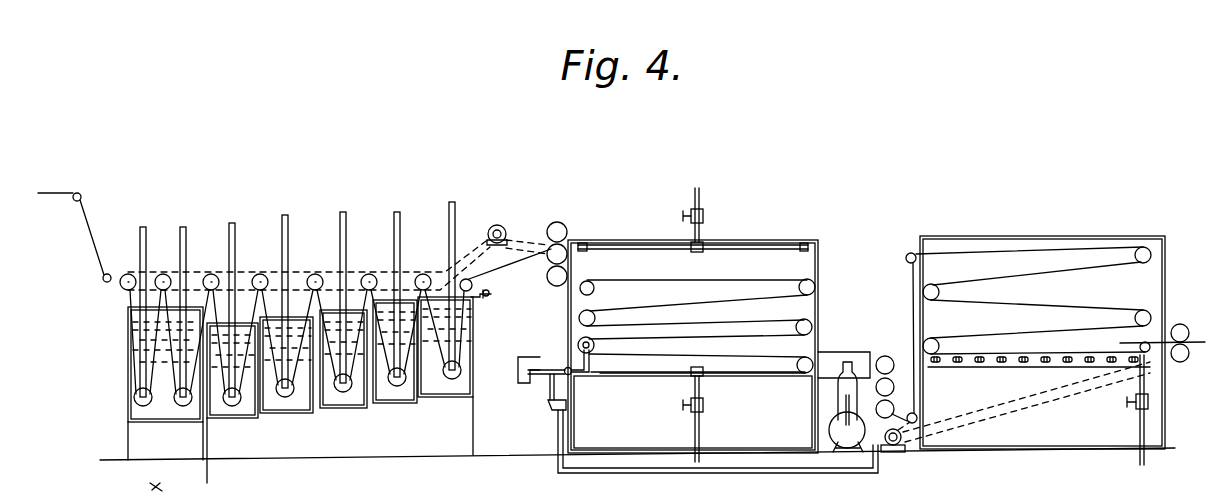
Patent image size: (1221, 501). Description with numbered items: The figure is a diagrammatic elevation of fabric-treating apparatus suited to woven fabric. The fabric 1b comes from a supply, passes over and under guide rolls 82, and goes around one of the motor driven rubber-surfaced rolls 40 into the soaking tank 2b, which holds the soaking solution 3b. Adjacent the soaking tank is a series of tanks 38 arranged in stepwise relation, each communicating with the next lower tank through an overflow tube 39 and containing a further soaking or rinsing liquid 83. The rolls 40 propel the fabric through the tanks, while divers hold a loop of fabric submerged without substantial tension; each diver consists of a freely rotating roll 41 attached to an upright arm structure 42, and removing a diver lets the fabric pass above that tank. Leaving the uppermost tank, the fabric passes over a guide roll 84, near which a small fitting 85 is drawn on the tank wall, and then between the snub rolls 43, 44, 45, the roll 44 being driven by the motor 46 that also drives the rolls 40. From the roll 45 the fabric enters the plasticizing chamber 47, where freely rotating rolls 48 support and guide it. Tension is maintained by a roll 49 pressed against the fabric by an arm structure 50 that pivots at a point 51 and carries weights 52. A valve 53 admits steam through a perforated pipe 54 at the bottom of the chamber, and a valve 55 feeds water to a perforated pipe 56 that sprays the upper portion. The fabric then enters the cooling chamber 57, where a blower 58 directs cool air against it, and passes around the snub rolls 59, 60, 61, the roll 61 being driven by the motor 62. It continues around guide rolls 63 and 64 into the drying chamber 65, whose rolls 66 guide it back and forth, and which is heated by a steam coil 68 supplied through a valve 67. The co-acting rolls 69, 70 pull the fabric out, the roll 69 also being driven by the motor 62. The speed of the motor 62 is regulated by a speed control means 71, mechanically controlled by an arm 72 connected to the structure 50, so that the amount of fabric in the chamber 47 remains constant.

The fabric 1b is at (88, 220).
The soaking tank 2b is at (128, 408).
The soaking solution 3b is at (158, 356).
The tanks 38 is at (256, 420).
The overflow tube 39 is at (208, 326).
The motor driven rubber-surfaced rolls 40 is at (124, 289).
The roll 41 is at (145, 408).
The upright arm structure 42 is at (184, 226).
The snub roll 43 is at (565, 226).
The snub roll 44 is at (548, 258).
The snub roll 45 is at (550, 281).
The motor 46 is at (500, 226).
The plasticizing chamber 47 is at (569, 323).
The rolls 48 is at (595, 293).
The roll 49 is at (597, 340).
The arm structure 50 is at (594, 362).
The pivot point 51 is at (573, 375).
The weights 52 is at (540, 358).
The valve 53 is at (704, 406).
The perforated pipe 54 is at (701, 371).
The valve 55 is at (704, 216).
The perforated pipe 56 is at (702, 252).
The cooling chamber 57 is at (852, 352).
The blower 58 is at (835, 403).
The snub roll 59 is at (889, 357).
The snub roll 60 is at (908, 360).
The snub roll 61 is at (879, 406).
The motor 62 is at (900, 452).
The guide roll 63 is at (917, 416).
The guide roll 64 is at (907, 260).
The drying chamber 65 is at (992, 238).
The rolls 66 is at (934, 285).
The valve 67 is at (1136, 406).
The steam coil 68 is at (1024, 356).
The roll 69 is at (1186, 362).
The roll 70 is at (1186, 325).
The speed control means 71 is at (553, 406).
The arm 72 is at (549, 386).
The guide rolls 82 is at (73, 198).
The soaking or rinsing liquid 83 is at (236, 330).
The guide roll 84 is at (472, 283).
The valve 85 is at (490, 296).